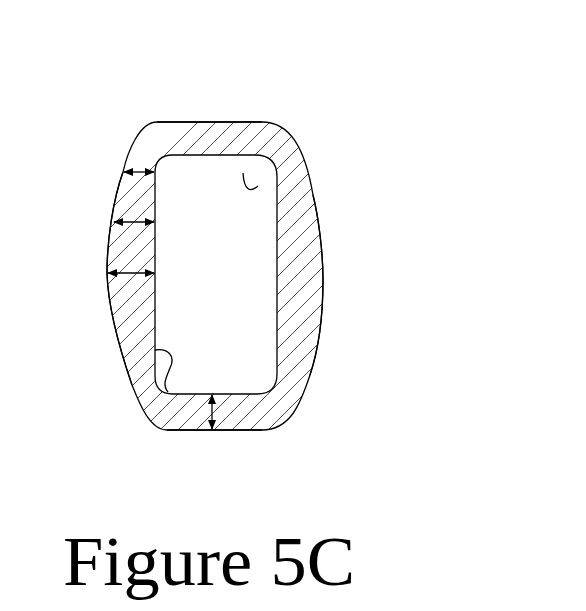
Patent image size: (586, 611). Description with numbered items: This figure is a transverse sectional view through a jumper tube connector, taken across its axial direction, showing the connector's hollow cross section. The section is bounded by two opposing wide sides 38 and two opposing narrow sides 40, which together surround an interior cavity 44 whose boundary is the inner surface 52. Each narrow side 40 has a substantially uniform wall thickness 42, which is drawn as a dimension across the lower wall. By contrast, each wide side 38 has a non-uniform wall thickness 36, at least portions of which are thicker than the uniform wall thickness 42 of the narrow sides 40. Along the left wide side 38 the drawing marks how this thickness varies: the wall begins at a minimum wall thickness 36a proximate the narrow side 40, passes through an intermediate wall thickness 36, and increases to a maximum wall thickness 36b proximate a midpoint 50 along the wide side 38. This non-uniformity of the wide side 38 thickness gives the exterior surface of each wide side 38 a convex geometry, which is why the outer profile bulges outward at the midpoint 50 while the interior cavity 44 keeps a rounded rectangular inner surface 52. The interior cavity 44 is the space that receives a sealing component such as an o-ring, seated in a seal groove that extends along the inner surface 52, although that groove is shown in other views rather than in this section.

The midpoint 50 is at (323, 273).
The narrow side 40 is at (243, 120).
The wide side 38 is at (320, 223).
The interior cavity 44 is at (258, 186).
The inner surface 52 is at (137, 403).
The wall thickness 42 is at (225, 412).
The minimum wall thickness 36a is at (136, 188).
The wall thickness 36 is at (134, 237).
The maximum wall thickness 36b is at (131, 288).